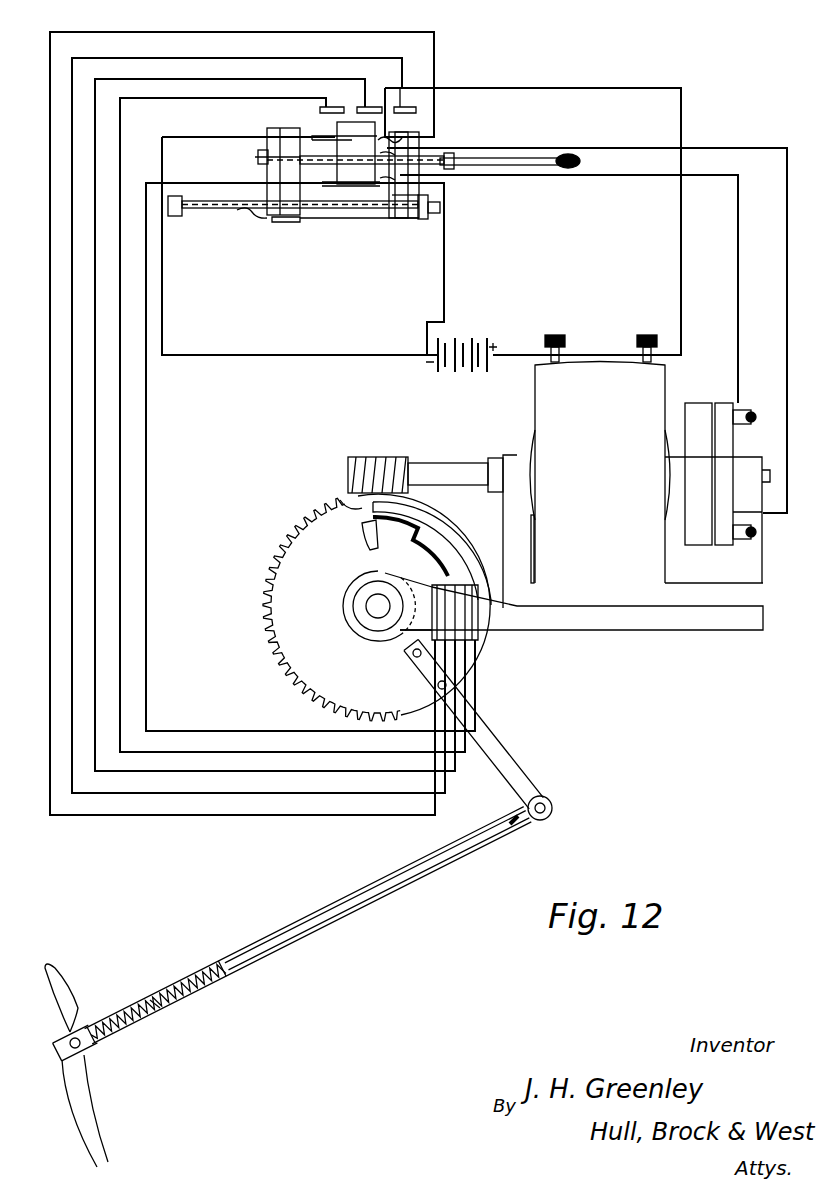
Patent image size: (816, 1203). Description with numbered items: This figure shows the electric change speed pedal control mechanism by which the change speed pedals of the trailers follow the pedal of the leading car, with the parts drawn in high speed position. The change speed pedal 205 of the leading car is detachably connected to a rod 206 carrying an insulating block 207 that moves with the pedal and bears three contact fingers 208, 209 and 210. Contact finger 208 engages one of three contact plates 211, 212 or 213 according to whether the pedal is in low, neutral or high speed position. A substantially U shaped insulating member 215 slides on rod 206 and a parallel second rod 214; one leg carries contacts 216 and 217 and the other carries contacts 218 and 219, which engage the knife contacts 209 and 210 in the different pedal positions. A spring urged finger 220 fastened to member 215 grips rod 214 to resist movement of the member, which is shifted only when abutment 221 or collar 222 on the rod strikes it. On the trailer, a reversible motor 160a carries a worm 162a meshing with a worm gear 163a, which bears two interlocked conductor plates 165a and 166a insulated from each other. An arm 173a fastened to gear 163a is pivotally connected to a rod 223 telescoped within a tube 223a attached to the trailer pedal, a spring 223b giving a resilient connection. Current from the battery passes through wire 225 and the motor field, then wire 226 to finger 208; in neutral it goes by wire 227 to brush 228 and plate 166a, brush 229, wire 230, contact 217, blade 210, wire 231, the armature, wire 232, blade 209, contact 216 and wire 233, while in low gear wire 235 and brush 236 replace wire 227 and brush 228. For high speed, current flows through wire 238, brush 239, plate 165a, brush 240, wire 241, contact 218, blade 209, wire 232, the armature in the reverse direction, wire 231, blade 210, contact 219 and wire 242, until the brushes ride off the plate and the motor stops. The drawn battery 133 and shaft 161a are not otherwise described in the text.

The battery 133 is at (466, 338).
The reversible motor 160a is at (650, 473).
The motor shaft 161a is at (462, 470).
The worm 162a is at (390, 460).
The worm gear 163a is at (376, 607).
The conductor plate 165a is at (366, 542).
The conductor plate 166a is at (340, 500).
The arm 173a is at (503, 753).
The change speed pedal 205 is at (575, 157).
The rod 206 is at (517, 158).
The insulating block 207 is at (343, 153).
The contact finger 208 is at (352, 122).
The contact finger 209 is at (325, 136).
The contact finger 210 is at (326, 182).
The contact plate 211 is at (326, 107).
The contact plate 212 is at (370, 107).
The contact plate 213 is at (405, 107).
The second rod 214 is at (216, 210).
The U shaped insulating member 215 is at (360, 222).
The contact 216 is at (270, 128).
The contact 217 is at (290, 212).
The contact 218 is at (396, 130).
The contact 219 is at (395, 222).
The spring urged finger 220 is at (265, 222).
The abutment 221 is at (256, 157).
The collar 222 is at (454, 156).
The rod 223 is at (398, 878).
The tube 223a is at (200, 992).
The spring 223b is at (160, 992).
The wire 225 is at (551, 337).
The wire 226 is at (490, 88).
The wire 227 is at (228, 79).
The brush 228 is at (458, 585).
The brush 229 is at (503, 600).
The wire 230 is at (210, 183).
The wire 231 is at (522, 175).
The wire 232 is at (628, 148).
The wire 233 is at (198, 137).
The wire 235 is at (142, 98).
The brush 236 is at (474, 585).
The wire 238 is at (88, 58).
The brush 239 is at (437, 583).
The brush 240 is at (428, 583).
The wire 241 is at (118, 32).
The wire 242 is at (445, 245).